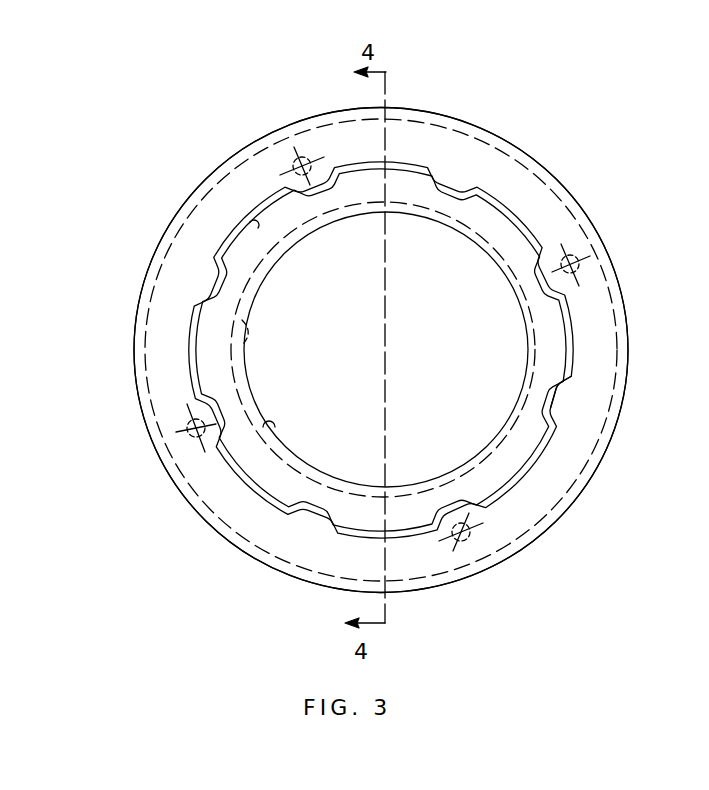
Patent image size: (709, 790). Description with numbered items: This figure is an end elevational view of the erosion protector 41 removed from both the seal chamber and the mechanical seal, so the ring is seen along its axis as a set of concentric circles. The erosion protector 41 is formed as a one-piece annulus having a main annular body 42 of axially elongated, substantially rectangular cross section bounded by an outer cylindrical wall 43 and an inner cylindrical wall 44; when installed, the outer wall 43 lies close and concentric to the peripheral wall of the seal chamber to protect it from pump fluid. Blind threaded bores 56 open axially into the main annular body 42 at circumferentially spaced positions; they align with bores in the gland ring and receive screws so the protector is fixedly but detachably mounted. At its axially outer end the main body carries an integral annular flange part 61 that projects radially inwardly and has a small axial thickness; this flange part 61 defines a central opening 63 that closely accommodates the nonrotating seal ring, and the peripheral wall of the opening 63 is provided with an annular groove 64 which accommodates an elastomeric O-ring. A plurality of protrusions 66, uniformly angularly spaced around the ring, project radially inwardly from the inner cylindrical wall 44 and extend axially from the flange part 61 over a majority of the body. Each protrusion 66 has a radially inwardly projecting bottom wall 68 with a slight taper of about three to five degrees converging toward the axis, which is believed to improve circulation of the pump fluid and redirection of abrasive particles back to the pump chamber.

The erosion protector 41 is at (527, 147).
The main annular body 42 is at (553, 487).
The outer cylindrical wall 43 is at (596, 211).
The inner cylindrical wall 44 is at (256, 226).
The blind threaded bores 56 is at (578, 263).
The annular flange part 61 is at (510, 228).
The central opening 63 is at (268, 429).
The annular groove 64 is at (240, 342).
The protrusions 66 is at (452, 181).
The bottom wall 68 is at (560, 380).